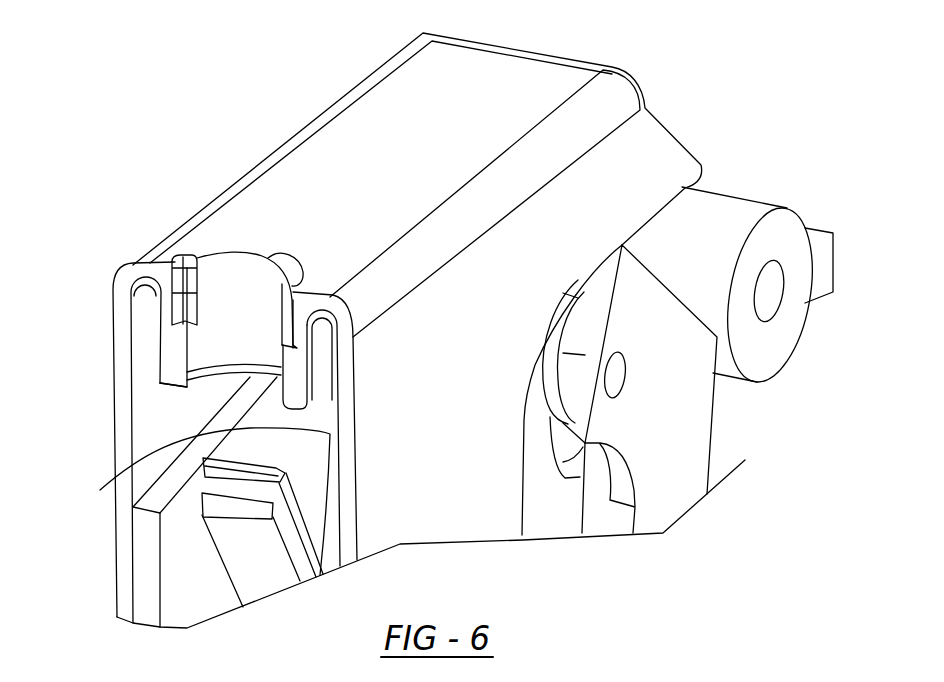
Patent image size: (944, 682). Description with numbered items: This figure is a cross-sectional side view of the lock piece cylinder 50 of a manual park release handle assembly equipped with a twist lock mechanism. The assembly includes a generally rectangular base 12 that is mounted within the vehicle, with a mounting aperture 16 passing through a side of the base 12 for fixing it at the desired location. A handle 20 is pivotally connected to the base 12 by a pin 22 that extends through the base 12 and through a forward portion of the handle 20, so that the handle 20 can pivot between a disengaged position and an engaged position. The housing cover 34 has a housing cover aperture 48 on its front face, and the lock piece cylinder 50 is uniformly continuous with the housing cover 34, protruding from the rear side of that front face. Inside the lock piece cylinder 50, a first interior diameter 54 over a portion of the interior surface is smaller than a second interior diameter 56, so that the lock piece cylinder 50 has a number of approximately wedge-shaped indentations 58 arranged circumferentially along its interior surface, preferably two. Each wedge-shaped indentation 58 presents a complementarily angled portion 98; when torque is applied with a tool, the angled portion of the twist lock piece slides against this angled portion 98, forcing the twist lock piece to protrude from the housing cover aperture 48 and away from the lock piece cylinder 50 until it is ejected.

The base 12 is at (709, 438).
The mounting aperture 16 is at (775, 282).
The handle 20 is at (256, 419).
The pin 22 is at (617, 376).
The housing cover 34 is at (118, 418).
The housing cover aperture 48 is at (200, 362).
The lock piece cylinder 50 is at (219, 272).
The first interior diameter 54 is at (284, 362).
The second interior diameter 56 is at (288, 312).
The wedge-shaped indentation 58 is at (293, 266).
The complementarily angled portion 98 is at (282, 335).